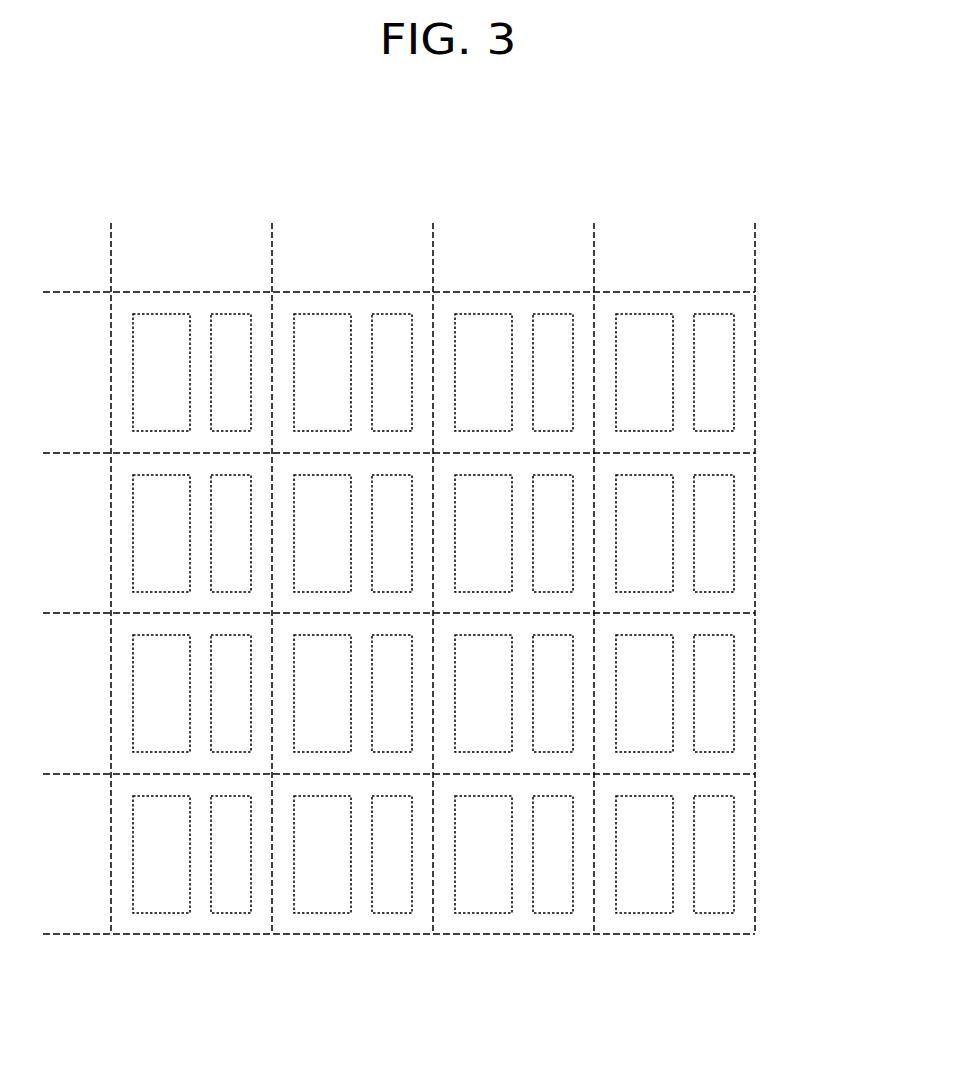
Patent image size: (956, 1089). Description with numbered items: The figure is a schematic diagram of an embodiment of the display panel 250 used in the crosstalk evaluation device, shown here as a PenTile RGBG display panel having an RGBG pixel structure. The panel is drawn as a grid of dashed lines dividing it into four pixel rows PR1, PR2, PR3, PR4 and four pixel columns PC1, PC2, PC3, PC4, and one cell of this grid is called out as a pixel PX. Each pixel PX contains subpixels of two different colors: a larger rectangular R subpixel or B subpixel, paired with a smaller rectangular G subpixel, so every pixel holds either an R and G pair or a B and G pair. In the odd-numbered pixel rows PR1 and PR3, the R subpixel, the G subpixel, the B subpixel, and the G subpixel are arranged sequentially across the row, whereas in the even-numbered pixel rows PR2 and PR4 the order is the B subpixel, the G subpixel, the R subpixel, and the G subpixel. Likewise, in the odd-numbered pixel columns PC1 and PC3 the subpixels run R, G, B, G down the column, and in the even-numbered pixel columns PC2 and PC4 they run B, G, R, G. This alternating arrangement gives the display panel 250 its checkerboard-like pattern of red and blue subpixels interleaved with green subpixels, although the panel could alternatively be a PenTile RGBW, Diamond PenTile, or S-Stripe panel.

The display panel 250 is at (755, 291).
The pixel PX is at (119, 304).
The first pixel column PC1 is at (156, 574).
The second pixel column PC2 is at (342, 574).
The third pixel column PC3 is at (503, 574).
The fourth pixel column PC4 is at (664, 574).
The first pixel row PR1 is at (393, 337).
The second pixel row PR2 is at (393, 498).
The third pixel row PR3 is at (393, 658).
The fourth pixel row PR4 is at (393, 819).